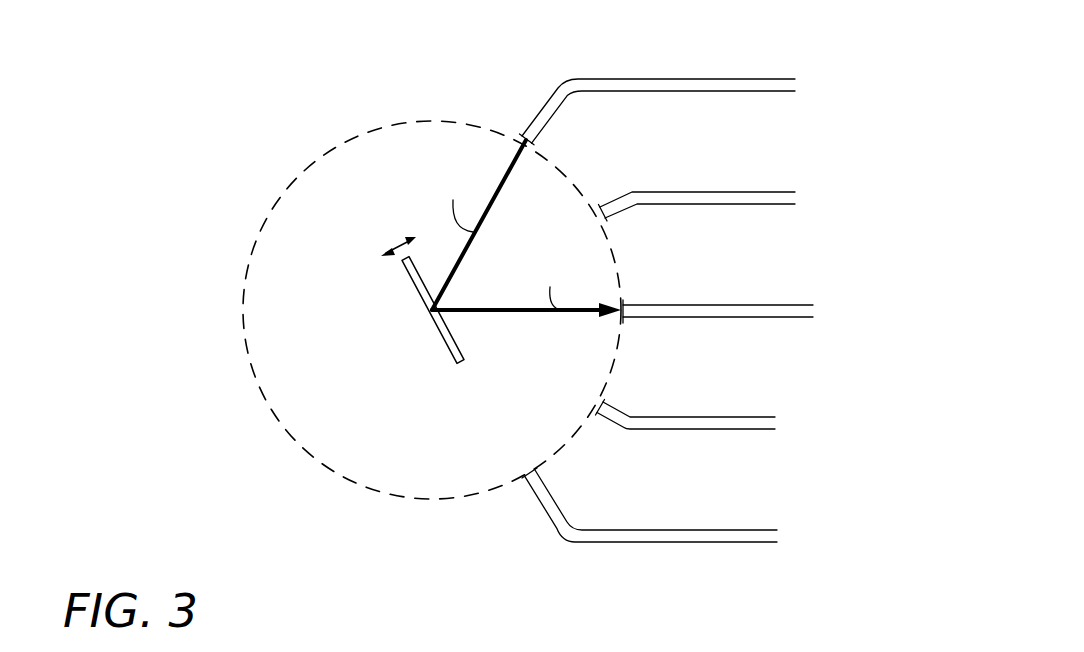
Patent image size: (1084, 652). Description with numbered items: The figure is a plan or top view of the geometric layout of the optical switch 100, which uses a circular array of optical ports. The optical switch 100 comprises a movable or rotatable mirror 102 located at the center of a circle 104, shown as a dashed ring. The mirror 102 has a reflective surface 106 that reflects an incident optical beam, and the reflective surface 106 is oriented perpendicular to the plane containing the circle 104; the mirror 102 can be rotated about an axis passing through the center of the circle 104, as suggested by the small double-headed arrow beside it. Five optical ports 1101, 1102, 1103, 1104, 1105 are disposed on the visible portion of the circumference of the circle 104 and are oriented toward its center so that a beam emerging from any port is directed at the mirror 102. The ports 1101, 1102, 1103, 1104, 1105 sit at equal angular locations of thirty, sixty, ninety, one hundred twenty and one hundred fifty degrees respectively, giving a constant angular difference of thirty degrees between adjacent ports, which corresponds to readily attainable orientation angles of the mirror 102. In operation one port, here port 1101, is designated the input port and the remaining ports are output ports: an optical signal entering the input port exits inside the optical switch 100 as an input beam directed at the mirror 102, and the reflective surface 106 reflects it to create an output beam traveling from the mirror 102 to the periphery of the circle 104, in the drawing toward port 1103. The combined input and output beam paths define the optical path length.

The optical switch 100 is at (236, 172).
The mirror 102 is at (443, 342).
The circle 104 is at (242, 312).
The reflective surface 106 is at (470, 347).
The optical port 1101 is at (535, 128).
The optical port 1102 is at (604, 206).
The optical port 1103 is at (636, 305).
The optical port 1104 is at (607, 406).
The optical port 1105 is at (538, 483).